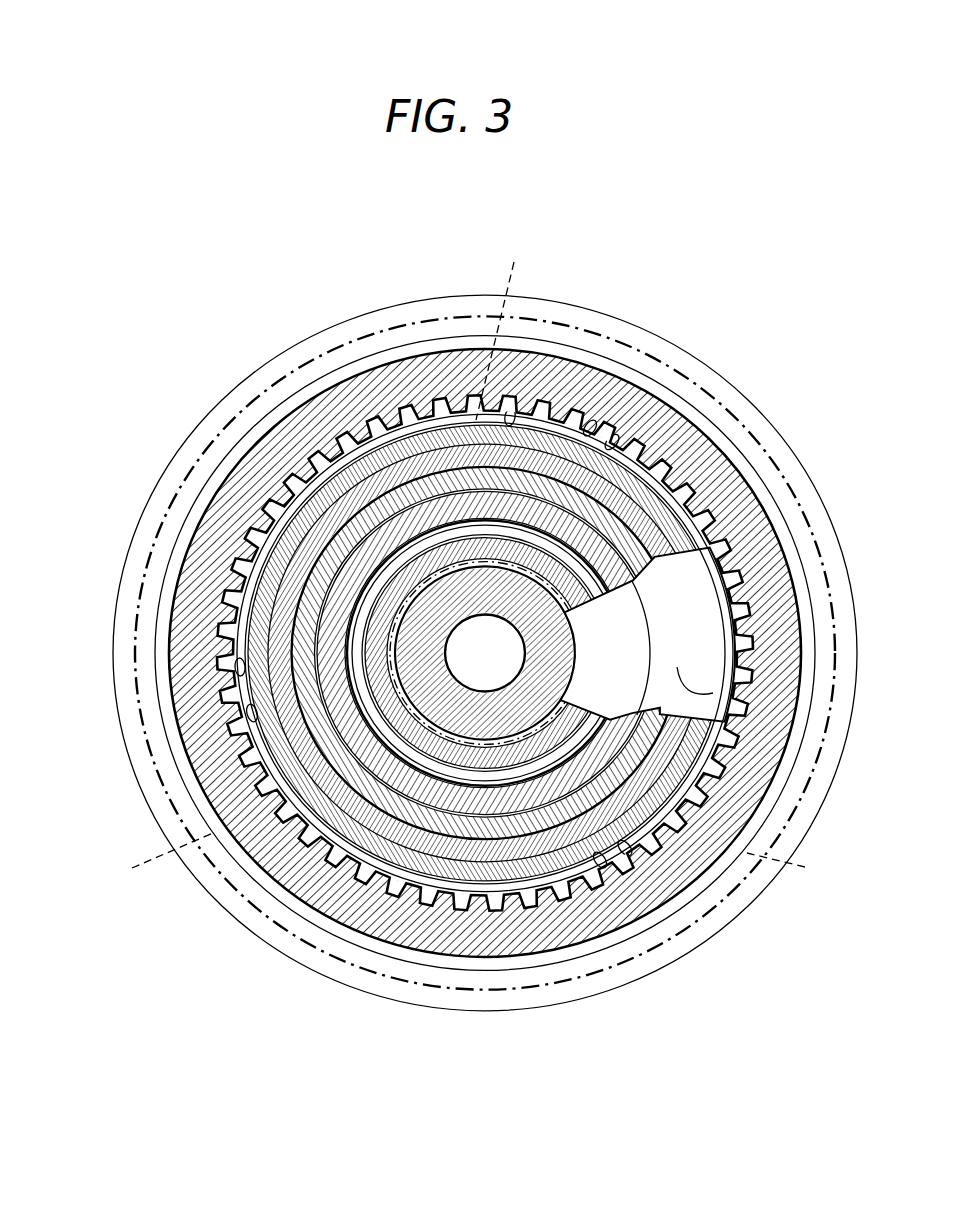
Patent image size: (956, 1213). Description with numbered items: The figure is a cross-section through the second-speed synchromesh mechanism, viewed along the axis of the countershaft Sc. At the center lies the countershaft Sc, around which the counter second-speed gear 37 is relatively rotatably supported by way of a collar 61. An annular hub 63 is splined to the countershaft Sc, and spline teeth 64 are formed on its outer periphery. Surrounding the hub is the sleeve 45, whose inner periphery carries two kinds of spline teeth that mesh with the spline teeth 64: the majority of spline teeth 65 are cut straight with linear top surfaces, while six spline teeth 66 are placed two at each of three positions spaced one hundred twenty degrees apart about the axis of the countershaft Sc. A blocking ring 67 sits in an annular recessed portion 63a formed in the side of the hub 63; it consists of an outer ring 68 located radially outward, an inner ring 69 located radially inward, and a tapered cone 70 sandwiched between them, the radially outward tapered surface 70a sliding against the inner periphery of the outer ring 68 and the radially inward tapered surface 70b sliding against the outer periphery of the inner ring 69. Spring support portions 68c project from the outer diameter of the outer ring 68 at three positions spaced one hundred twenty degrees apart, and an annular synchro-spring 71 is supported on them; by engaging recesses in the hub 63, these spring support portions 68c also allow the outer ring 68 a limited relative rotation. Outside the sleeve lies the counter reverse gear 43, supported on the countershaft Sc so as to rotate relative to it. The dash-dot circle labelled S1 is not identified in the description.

The counter second-speed gear 37 is at (494, 560).
The counter reverse gear 43 is at (702, 392).
The sleeve 45 is at (645, 392).
The collar 61 is at (540, 585).
The annular hub 63 is at (627, 658).
The annular recessed portion 63a is at (693, 673).
The spline teeth 64 is at (347, 460).
The spline teeth 65 is at (605, 438).
The spline teeth 66 is at (474, 559).
The blocking ring 67 is at (377, 565).
The outer ring 68 is at (290, 518).
The spring support portions 68c is at (462, 625).
The inner ring 69 is at (283, 618).
The tapered cone 70 is at (402, 565).
The radially outward tapered surface 70a is at (425, 465).
The radially inward tapered surface 70b is at (448, 477).
The synchro-spring 71 is at (535, 893).
The countershaft Sc is at (561, 665).
The section line S1 is at (773, 427).